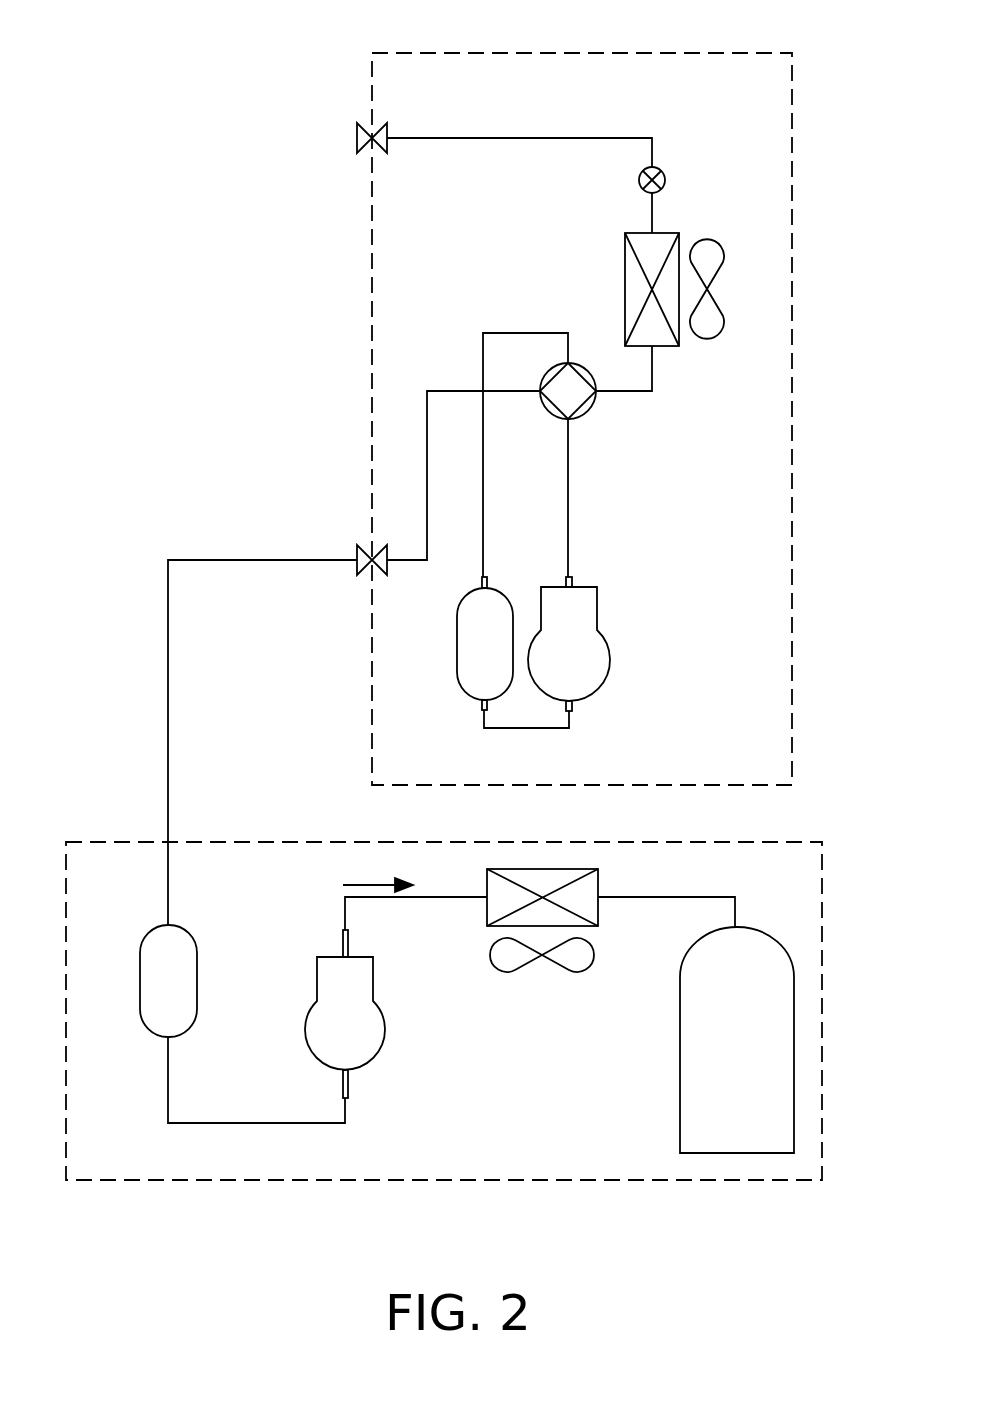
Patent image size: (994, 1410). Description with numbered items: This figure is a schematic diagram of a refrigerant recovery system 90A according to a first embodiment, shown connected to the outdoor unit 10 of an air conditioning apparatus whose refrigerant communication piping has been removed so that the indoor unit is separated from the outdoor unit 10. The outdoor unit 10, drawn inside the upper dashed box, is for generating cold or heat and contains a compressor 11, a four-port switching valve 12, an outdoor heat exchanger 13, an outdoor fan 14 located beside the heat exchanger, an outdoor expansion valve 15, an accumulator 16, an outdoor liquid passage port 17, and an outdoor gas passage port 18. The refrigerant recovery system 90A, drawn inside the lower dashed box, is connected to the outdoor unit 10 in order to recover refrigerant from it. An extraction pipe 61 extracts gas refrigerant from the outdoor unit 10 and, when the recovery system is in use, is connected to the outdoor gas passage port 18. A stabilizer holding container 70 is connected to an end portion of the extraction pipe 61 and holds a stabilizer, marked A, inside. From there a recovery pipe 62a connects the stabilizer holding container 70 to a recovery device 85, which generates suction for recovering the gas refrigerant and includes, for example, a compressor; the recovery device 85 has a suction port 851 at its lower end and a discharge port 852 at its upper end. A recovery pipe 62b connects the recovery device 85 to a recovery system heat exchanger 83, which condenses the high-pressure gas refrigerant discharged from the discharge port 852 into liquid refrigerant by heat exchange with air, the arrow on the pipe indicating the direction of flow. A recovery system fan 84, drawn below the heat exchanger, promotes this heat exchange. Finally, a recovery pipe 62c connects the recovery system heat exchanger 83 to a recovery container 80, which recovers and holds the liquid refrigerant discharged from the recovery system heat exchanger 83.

The outdoor unit 10 is at (427, 53).
The compressor 11 is at (612, 657).
The four-port switching valve 12 is at (548, 411).
The outdoor heat exchanger 13 is at (625, 290).
The outdoor fan 14 is at (725, 323).
The outdoor expansion valve 15 is at (666, 180).
The accumulator 16 is at (457, 643).
The outdoor liquid passage port 17 is at (365, 157).
The outdoor gas passage port 18 is at (368, 547).
The extraction pipe 61 is at (168, 740).
The refrigerant recovery system 90A is at (122, 840).
The stabilizer holding container 70 is at (197, 983).
The recovery pipe 62a is at (255, 1123).
The recovery pipe 62b is at (467, 895).
The recovery pipe 62c is at (716, 896).
The recovery device 85 is at (385, 1025).
The suction port 851 is at (348, 1077).
The discharge port 852 is at (348, 940).
The recovery system heat exchanger 83 is at (573, 869).
The recovery system fan 84 is at (575, 973).
The recovery container 80 is at (680, 1123).